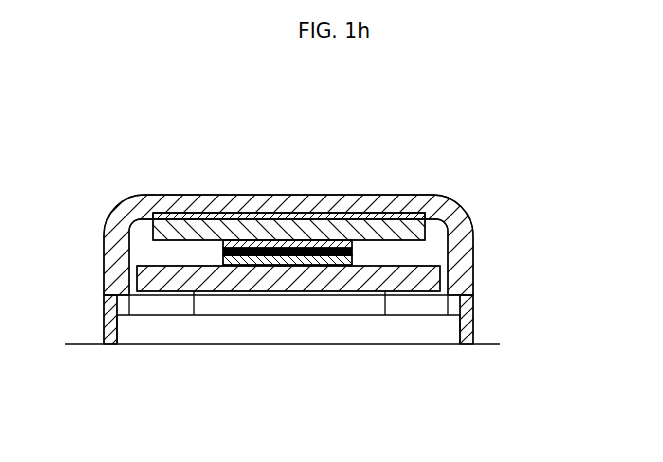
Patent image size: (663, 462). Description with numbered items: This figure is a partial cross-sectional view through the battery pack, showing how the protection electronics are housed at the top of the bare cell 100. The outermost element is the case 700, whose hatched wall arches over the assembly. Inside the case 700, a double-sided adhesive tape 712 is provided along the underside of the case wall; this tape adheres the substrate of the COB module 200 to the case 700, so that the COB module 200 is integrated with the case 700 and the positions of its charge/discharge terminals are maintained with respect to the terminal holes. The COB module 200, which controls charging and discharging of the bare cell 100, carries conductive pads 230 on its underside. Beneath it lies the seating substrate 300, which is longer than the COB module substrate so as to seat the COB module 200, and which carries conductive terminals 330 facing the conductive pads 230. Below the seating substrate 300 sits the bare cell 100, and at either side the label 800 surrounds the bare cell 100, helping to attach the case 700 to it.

The bare cell 100 is at (471, 328).
The COB module 200 is at (321, 205).
The conductive pads 230 is at (303, 244).
The seating substrate 300 is at (440, 254).
The conductive terminals 330 is at (357, 262).
The case 700 is at (115, 190).
The double-sided adhesive tape 712 is at (202, 223).
The label 800 is at (470, 313).